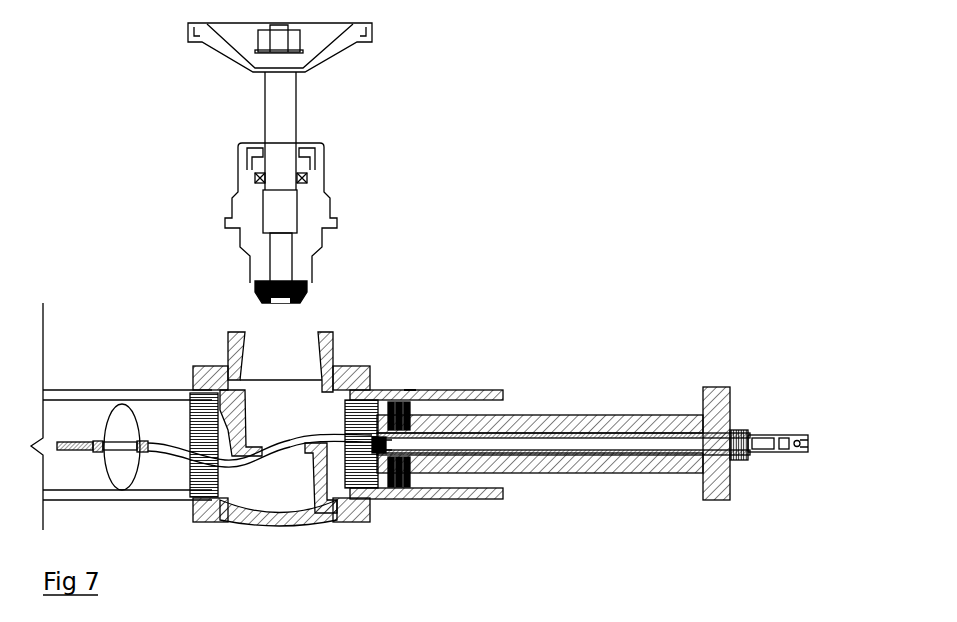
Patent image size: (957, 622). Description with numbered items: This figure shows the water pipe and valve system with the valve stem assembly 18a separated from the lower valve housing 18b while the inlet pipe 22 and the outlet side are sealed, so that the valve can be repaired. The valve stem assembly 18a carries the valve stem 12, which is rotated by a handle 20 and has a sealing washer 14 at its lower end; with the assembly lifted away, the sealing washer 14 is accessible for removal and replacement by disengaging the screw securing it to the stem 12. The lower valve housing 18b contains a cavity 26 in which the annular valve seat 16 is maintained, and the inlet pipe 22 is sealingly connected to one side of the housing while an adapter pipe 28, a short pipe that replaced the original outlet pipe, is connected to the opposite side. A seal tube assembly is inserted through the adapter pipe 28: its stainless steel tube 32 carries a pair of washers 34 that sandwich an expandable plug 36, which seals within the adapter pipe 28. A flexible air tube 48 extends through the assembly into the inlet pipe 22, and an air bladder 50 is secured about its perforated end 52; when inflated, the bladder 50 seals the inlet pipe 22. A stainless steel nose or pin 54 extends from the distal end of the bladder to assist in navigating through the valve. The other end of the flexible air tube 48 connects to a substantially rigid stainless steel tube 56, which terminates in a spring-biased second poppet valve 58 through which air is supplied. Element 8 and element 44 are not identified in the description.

The sensor assembly 8 is at (521, 426).
The valve stem 12 is at (298, 133).
The sealing washer 14 is at (312, 290).
The annular valve seat 16 is at (289, 458).
The valve stem assembly 18a is at (233, 197).
The lower valve housing 18b is at (229, 333).
The handle 20 is at (372, 33).
The inlet pipe 22 is at (87, 390).
The cavity 26 is at (237, 487).
The adapter pipe 28 is at (417, 502).
The tube 32 is at (663, 412).
The washers 34 is at (392, 392).
The expandable plug 36 is at (408, 396).
The flange 44 is at (720, 384).
The flexible air tube 48 is at (258, 452).
The air bladder 50 is at (141, 484).
The perforated end 52 is at (132, 435).
The stainless steel nose or pin 54 is at (80, 453).
The rigid stainless steel tube 56 is at (606, 474).
The second air valve or poppet valve 58 is at (794, 433).